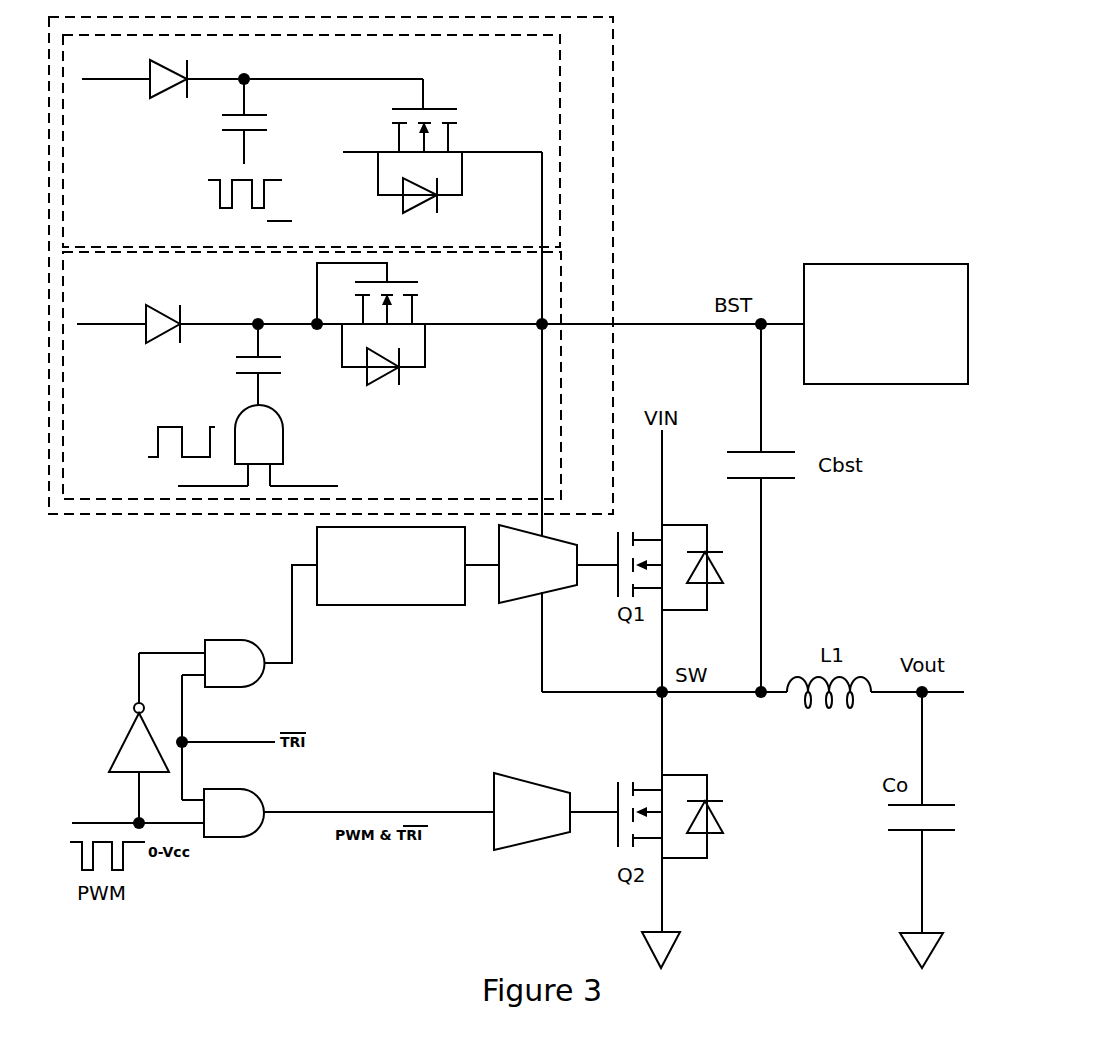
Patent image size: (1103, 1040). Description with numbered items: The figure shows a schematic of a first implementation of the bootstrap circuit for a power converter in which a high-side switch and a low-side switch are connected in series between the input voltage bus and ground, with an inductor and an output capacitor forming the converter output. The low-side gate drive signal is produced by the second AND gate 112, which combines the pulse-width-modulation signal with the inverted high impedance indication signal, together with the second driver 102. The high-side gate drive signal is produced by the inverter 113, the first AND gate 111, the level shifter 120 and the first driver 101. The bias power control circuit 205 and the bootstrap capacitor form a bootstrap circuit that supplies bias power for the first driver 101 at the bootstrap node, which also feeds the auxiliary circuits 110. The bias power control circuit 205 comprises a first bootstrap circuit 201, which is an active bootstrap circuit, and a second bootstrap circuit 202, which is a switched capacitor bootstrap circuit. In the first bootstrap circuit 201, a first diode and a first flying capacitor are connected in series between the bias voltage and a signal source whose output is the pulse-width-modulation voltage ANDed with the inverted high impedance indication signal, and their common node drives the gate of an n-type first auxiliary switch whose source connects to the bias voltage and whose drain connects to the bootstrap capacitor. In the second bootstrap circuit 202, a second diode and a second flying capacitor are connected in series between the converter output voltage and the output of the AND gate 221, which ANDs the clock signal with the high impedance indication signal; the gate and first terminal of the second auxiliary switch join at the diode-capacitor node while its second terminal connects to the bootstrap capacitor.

The first driver 101 is at (514, 576).
The second driver 102 is at (510, 823).
The auxiliary circuits 110 is at (867, 366).
The first AND gate 111 is at (250, 674).
The second AND gate 112 is at (218, 823).
The inverter 113 is at (155, 769).
The level shifter 120 is at (372, 596).
The first bootstrap circuit 201 is at (137, 231).
The second bootstrap circuit 202 is at (75, 494).
The bias power control circuit 205 is at (607, 56).
The AND gate 221 is at (243, 451).